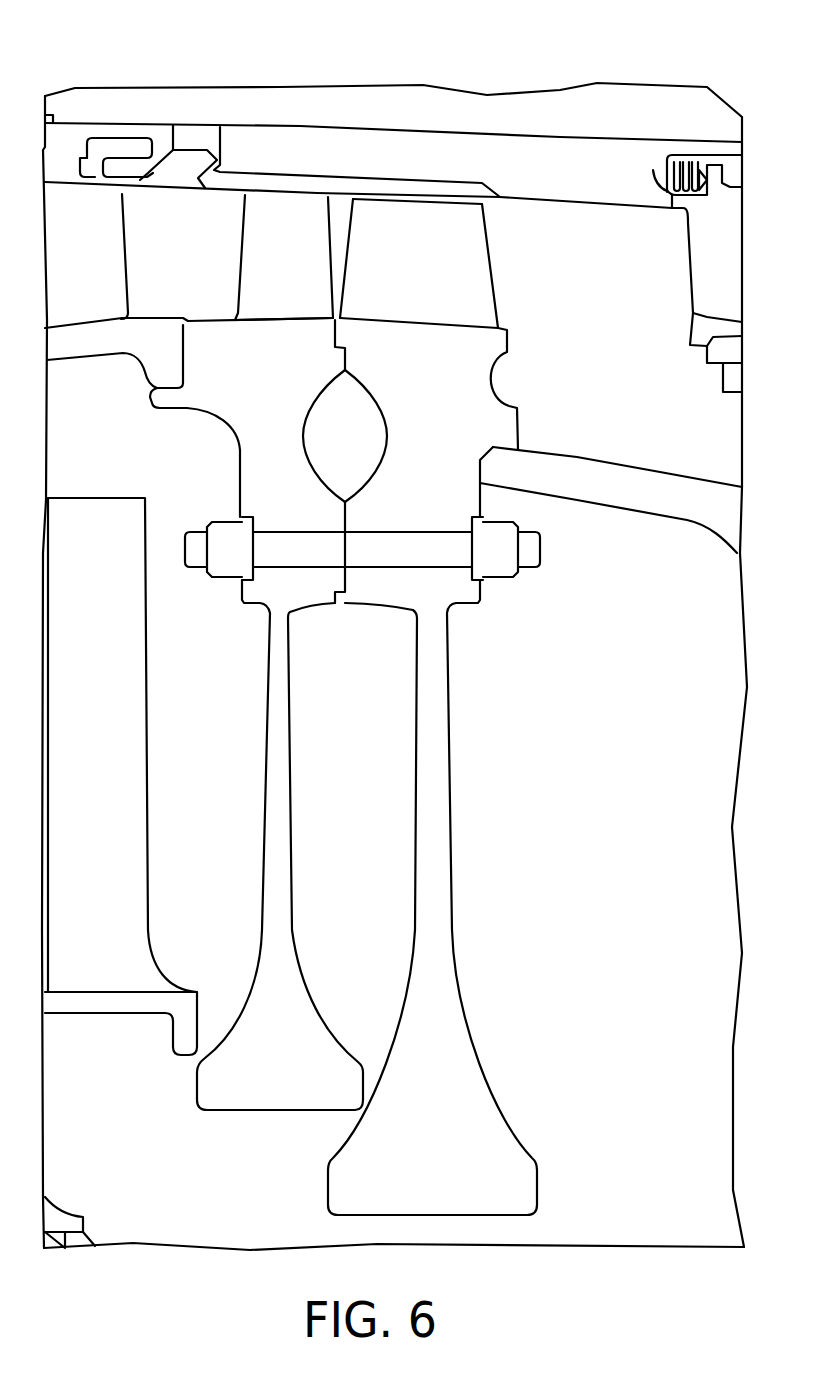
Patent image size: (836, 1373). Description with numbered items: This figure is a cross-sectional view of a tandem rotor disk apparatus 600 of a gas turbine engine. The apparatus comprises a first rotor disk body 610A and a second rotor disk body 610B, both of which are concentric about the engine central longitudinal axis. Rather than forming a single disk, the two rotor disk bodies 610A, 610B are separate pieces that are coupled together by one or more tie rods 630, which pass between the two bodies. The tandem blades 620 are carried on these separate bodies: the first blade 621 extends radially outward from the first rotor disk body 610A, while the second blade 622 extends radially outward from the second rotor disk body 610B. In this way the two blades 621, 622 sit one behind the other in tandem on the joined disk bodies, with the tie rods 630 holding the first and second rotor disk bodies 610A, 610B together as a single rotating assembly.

The tandem rotor disk apparatus 600 is at (578, 852).
The first rotor disk body 610A is at (278, 667).
The second rotor disk body 610B is at (435, 675).
The tandem blades 620 is at (334, 194).
The first blade 621 is at (284, 257).
The second blade 622 is at (419, 263).
The tie rods 630 is at (558, 552).